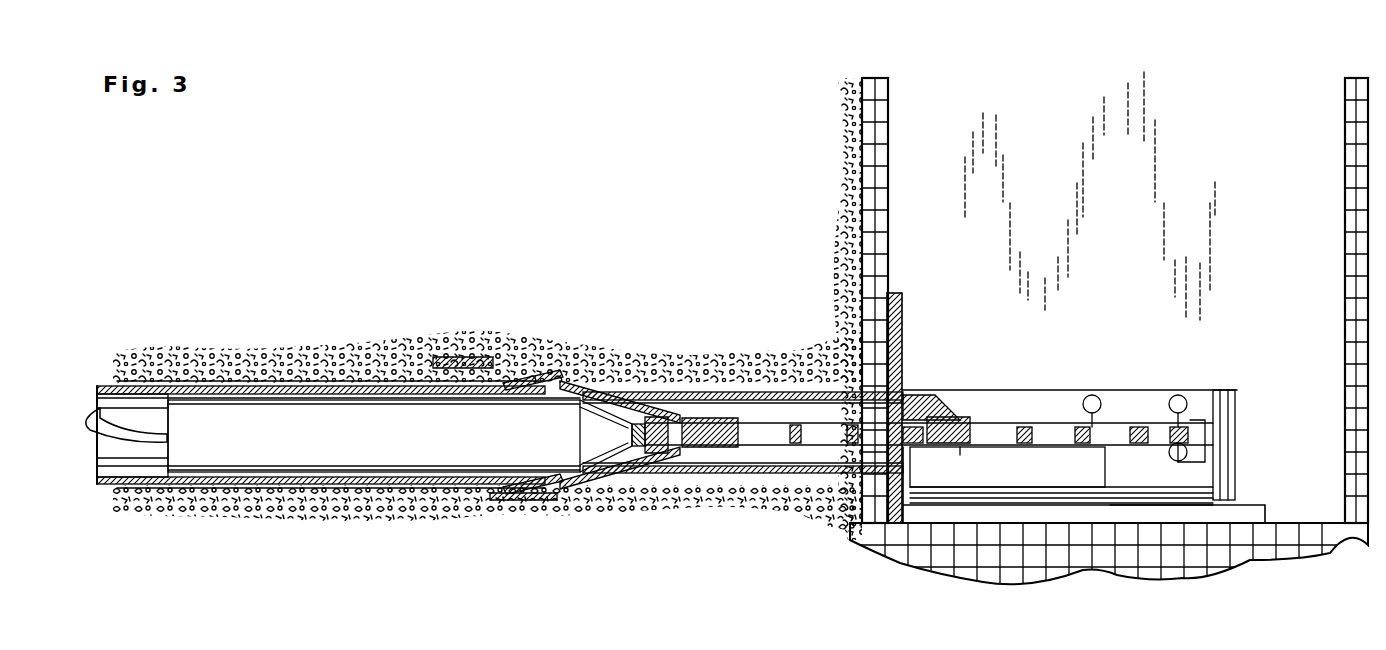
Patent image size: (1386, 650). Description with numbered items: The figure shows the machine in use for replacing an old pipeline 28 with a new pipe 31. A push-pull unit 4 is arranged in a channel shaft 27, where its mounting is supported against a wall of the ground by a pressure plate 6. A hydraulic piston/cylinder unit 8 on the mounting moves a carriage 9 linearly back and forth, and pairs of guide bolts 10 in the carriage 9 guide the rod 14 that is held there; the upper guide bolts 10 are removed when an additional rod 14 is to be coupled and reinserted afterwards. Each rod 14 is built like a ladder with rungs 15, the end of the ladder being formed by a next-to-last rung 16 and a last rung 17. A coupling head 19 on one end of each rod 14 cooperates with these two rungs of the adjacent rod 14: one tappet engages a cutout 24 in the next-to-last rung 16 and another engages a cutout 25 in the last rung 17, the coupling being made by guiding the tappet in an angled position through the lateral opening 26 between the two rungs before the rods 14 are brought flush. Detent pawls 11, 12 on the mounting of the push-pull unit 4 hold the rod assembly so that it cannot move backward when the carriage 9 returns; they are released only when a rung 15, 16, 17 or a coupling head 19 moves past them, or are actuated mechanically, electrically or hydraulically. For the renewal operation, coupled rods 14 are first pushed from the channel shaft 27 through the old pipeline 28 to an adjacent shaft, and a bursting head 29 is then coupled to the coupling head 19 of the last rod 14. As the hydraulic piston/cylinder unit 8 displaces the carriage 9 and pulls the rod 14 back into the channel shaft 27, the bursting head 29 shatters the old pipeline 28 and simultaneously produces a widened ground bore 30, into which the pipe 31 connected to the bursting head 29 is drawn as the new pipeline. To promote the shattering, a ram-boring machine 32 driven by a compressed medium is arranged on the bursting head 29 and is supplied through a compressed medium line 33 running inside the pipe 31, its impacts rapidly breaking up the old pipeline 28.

The push-pull unit 4 is at (1228, 274).
The pressure plate 6 is at (900, 322).
The hydraulic piston/cylinder unit 8 is at (955, 490).
The carriage 9 is at (1180, 394).
The guide bolts 10 is at (1083, 426).
The detent pawl 11 is at (1060, 450).
The detent pawl 12 is at (915, 398).
The rod 14 is at (820, 415).
The rung 15 is at (1024, 426).
The next-to-last rung 16 is at (1136, 426).
The last rung 17 is at (1192, 420).
The coupling head 19 is at (712, 428).
The cutout 24 is at (1140, 430).
The cutout 25 is at (1190, 452).
The lateral opening 26 is at (1158, 450).
The channel shaft 27 is at (1127, 204).
The old pipeline 28 is at (740, 487).
The bursting head 29 is at (580, 496).
The widened ground bore 30 is at (395, 487).
The pipe 31 is at (262, 482).
The ram-boring machine 32 is at (315, 420).
The compressed medium line 33 is at (128, 410).